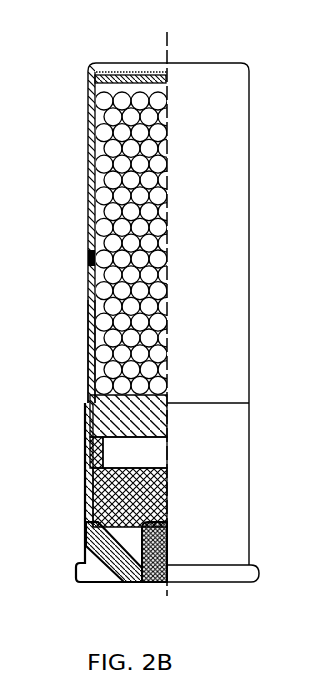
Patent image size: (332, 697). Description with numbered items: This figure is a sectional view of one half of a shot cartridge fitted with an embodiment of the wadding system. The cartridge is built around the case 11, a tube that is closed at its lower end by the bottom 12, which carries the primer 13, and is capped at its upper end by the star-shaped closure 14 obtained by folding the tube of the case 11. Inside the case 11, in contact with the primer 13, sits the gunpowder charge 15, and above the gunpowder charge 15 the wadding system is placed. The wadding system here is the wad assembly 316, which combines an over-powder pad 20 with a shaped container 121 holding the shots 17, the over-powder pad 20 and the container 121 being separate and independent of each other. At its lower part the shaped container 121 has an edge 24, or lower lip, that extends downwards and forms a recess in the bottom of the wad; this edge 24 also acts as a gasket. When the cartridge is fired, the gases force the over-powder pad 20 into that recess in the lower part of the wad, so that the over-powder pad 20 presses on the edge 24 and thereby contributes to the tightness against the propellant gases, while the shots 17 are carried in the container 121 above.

The case 11 is at (88, 156).
The shaped container 121 is at (88, 332).
The wad assembly 316 is at (96, 259).
The star-shaped closure 14 is at (137, 78).
The shots 17 is at (150, 150).
The edge 24 is at (100, 452).
The over-powder pad 20 is at (168, 449).
The gunpowder charge 15 is at (93, 498).
The bottom 12 is at (100, 556).
The primer 13 is at (170, 548).